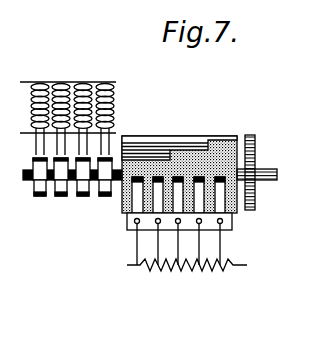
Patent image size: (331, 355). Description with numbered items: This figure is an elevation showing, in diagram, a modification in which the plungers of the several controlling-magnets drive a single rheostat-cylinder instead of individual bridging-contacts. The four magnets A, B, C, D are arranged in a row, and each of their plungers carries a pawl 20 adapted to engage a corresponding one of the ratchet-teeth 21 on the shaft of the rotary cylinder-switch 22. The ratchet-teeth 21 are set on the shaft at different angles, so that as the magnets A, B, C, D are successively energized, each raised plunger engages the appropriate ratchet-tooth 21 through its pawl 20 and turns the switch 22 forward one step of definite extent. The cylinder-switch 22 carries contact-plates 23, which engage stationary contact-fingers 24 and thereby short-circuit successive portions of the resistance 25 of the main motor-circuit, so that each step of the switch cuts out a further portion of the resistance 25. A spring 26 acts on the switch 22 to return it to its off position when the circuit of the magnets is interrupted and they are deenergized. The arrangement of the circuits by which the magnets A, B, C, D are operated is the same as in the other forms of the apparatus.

The magnet A is at (40, 109).
The magnet B is at (61, 109).
The magnet C is at (83, 109).
The magnet D is at (105, 109).
The pawl 20 is at (40, 197).
The ratchet-tooth 21 is at (105, 196).
The rotary cylinder-switch 22 is at (196, 136).
The contact-plate 23 is at (204, 140).
The stationary contact-finger 24 is at (137, 207).
The resistance 25 is at (183, 272).
The spring 26 is at (256, 192).